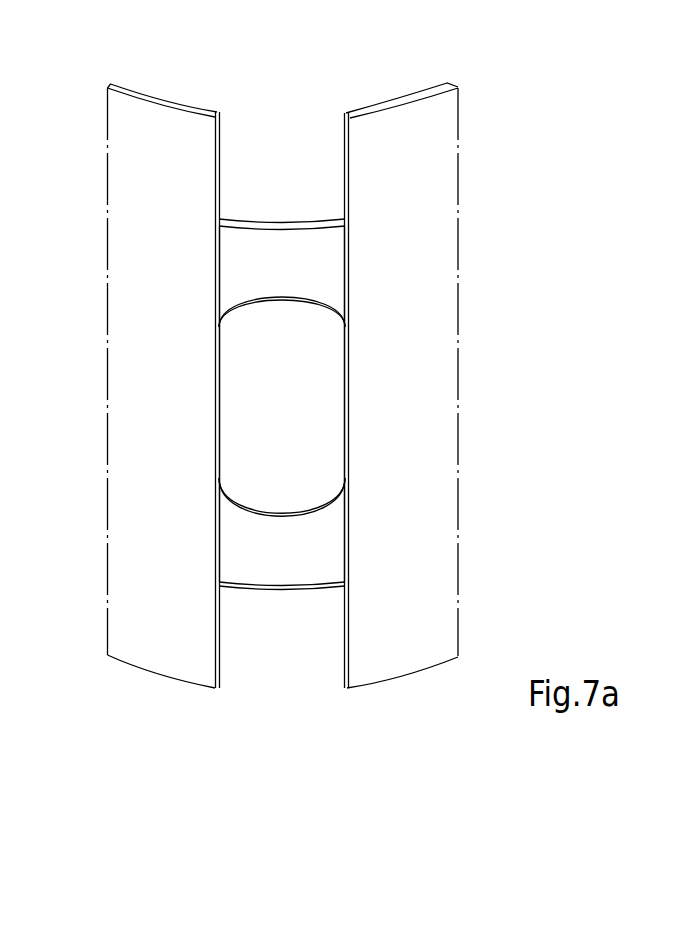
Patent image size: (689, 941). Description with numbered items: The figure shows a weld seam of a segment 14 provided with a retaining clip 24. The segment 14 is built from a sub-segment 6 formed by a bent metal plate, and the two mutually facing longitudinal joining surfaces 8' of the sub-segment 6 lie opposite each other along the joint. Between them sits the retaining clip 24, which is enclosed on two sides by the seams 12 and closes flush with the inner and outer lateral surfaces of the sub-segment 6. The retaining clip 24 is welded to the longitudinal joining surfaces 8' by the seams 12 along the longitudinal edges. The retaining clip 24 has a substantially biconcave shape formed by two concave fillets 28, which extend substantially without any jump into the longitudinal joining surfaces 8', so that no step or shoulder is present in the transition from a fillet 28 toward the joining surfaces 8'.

The sub-segment 6 is at (150, 269).
The longitudinal joining surfaces 8' is at (282, 399).
The seams 12 is at (215, 535).
The segment 14 is at (316, 108).
The retaining clip 24 is at (273, 256).
The concave fillets 28 is at (305, 302).